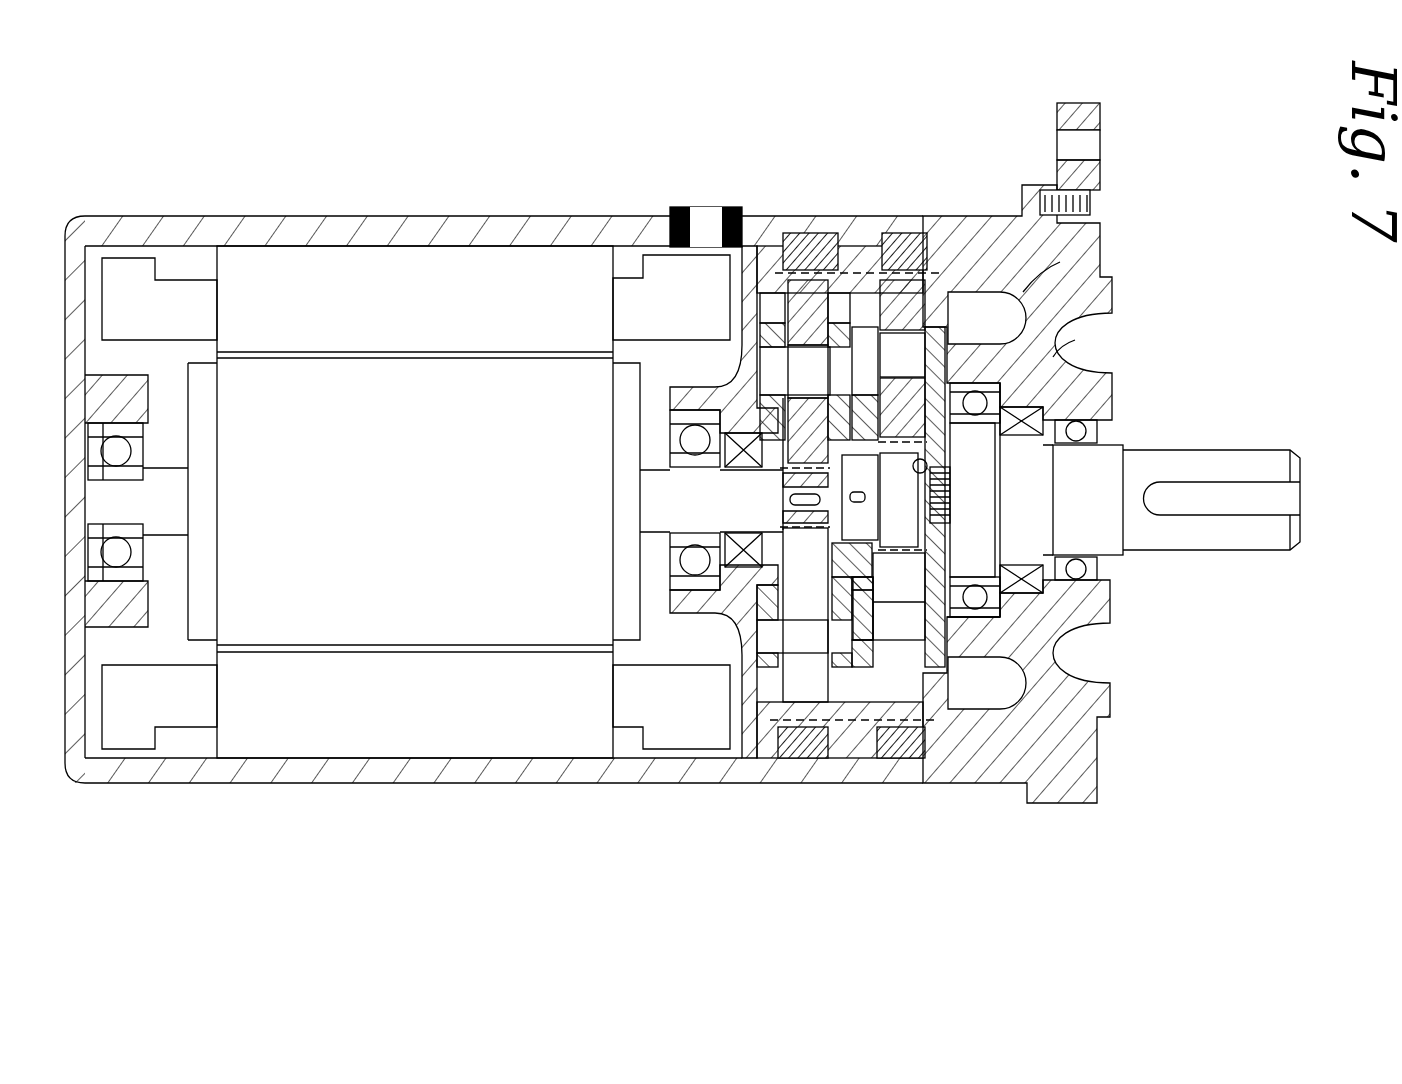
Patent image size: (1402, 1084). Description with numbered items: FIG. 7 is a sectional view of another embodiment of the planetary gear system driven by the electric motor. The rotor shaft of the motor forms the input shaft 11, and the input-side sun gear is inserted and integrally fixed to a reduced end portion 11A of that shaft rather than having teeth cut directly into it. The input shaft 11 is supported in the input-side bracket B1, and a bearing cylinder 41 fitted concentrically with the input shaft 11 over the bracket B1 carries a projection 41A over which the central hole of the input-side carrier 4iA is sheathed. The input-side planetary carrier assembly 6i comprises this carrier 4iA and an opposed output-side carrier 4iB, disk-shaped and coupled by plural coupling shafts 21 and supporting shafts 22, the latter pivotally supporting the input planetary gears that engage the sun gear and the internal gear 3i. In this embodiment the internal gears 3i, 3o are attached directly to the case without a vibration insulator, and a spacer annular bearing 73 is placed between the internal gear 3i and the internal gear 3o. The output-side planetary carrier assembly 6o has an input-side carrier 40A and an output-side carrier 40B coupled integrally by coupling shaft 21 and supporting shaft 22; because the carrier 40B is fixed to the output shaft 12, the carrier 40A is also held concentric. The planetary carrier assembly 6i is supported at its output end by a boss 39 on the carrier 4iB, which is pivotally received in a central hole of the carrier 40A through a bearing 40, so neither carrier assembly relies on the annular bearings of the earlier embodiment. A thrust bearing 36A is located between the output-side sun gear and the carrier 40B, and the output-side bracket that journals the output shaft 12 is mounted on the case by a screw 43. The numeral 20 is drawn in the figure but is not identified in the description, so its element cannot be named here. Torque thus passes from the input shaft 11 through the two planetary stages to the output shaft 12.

The input shaft 11 is at (665, 568).
The reduced end portion 11A is at (740, 548).
The bearing cylinder 41 is at (790, 520).
The projection 41A is at (775, 640).
The bracket B1 is at (805, 700).
The carrier 4iB is at (812, 762).
The carrier 4iA is at (727, 205).
The bearing 40 is at (915, 600).
The carrier 40A is at (905, 660).
The carrier 40B is at (1033, 268).
The planetary carrier assembly 6i is at (784, 203).
The internal gear 3i is at (817, 218).
The spacer annular bearing 73 is at (863, 218).
The internal gear 3o is at (912, 218).
The planetary carrier assembly 6o is at (953, 290).
The screw 43 is at (1100, 200).
The supporting shaft 22 is at (1053, 357).
The thrust bearing 36A is at (1114, 385).
The output shaft 12 is at (1177, 448).
The boss 39 is at (1110, 597).
The coupling shaft 21 is at (915, 628).
The output flange 20 is at (1100, 562).